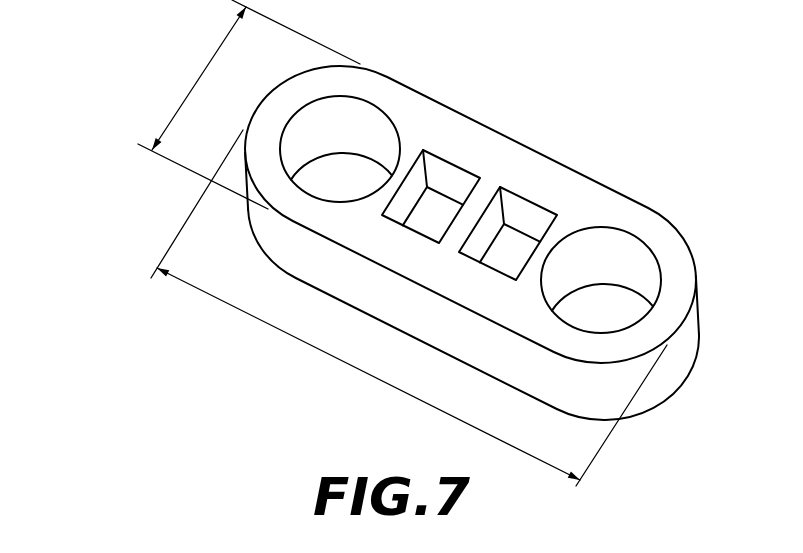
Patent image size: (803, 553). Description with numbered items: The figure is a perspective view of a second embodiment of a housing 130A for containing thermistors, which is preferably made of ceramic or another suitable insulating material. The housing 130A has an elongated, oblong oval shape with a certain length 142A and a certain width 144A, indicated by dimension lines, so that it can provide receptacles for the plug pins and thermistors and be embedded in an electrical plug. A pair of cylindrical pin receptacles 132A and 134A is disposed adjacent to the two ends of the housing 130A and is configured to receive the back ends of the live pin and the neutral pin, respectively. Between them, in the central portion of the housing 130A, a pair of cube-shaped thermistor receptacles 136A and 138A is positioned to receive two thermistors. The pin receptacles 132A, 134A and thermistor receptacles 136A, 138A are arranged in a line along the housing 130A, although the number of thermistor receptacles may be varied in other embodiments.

The housing 130A is at (142, 187).
The pin receptacle 132A is at (370, 135).
The pin receptacle 134A is at (617, 258).
The thermistor receptacle 136A is at (442, 210).
The thermistor receptacle 138A is at (517, 247).
The length 142A is at (368, 372).
The width 144A is at (198, 80).